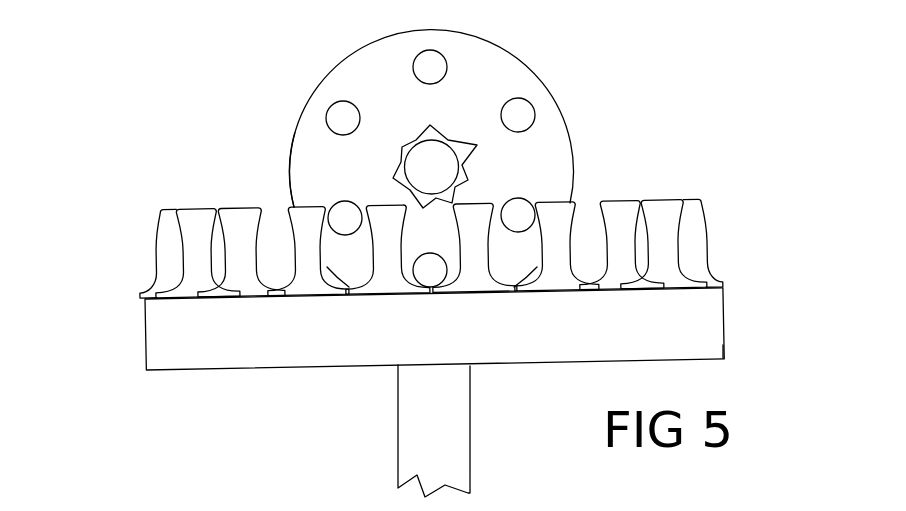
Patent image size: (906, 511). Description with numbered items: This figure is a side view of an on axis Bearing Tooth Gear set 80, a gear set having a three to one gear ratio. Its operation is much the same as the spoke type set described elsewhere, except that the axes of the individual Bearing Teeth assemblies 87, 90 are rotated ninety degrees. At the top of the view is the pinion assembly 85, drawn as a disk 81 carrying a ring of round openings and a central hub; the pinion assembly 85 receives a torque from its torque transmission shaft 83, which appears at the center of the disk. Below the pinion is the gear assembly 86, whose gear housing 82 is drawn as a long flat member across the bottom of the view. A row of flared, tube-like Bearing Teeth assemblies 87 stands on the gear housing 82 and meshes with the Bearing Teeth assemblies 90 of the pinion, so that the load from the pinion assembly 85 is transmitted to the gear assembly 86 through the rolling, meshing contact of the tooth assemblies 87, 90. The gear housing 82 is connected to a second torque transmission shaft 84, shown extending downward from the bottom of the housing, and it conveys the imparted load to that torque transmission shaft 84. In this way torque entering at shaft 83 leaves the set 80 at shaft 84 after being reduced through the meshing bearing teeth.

The on axis Bearing Tooth Gear set 80 is at (88, 299).
The disk 81 is at (505, 68).
The gear housing 82 is at (700, 322).
The torque transmission shaft 83 is at (442, 142).
The torque transmission shaft 84 is at (398, 432).
The pinion assembly 85 is at (293, 133).
The gear assembly 86 is at (723, 350).
The Bearing Teeth assembly 87 is at (625, 203).
The Bearing Teeth assembly 90 is at (535, 107).